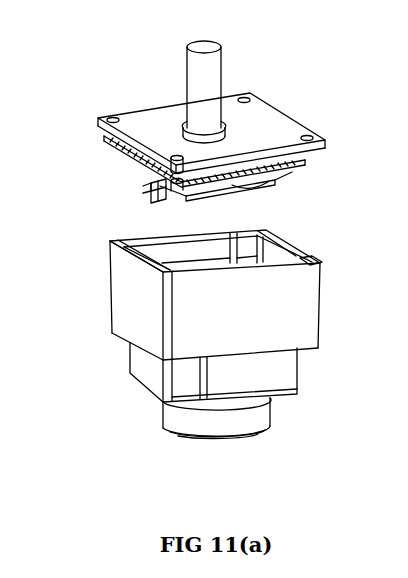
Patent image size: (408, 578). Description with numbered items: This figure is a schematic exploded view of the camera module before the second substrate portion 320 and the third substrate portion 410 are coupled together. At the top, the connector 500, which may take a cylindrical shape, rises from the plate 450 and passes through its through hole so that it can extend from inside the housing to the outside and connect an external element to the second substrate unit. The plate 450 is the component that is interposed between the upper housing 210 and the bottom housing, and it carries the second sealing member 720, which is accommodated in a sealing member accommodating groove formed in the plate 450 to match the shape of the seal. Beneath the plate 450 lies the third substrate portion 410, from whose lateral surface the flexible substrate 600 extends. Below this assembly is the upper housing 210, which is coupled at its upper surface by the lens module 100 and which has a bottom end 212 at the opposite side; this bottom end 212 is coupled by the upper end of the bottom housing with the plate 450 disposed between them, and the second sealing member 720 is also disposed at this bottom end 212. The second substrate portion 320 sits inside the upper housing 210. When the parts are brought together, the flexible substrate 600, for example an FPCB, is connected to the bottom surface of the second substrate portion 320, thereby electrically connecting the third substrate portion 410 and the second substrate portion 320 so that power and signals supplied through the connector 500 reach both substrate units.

The lens module 100 is at (176, 415).
The upper housing 210 is at (210, 281).
The bottom end 212 is at (316, 263).
The second substrate portion 320 is at (217, 263).
The third substrate portion 410 is at (240, 177).
The plate 450 is at (283, 130).
The connector 500 is at (223, 72).
The flexible substrate 600 is at (152, 192).
The second sealing member 720 is at (297, 163).